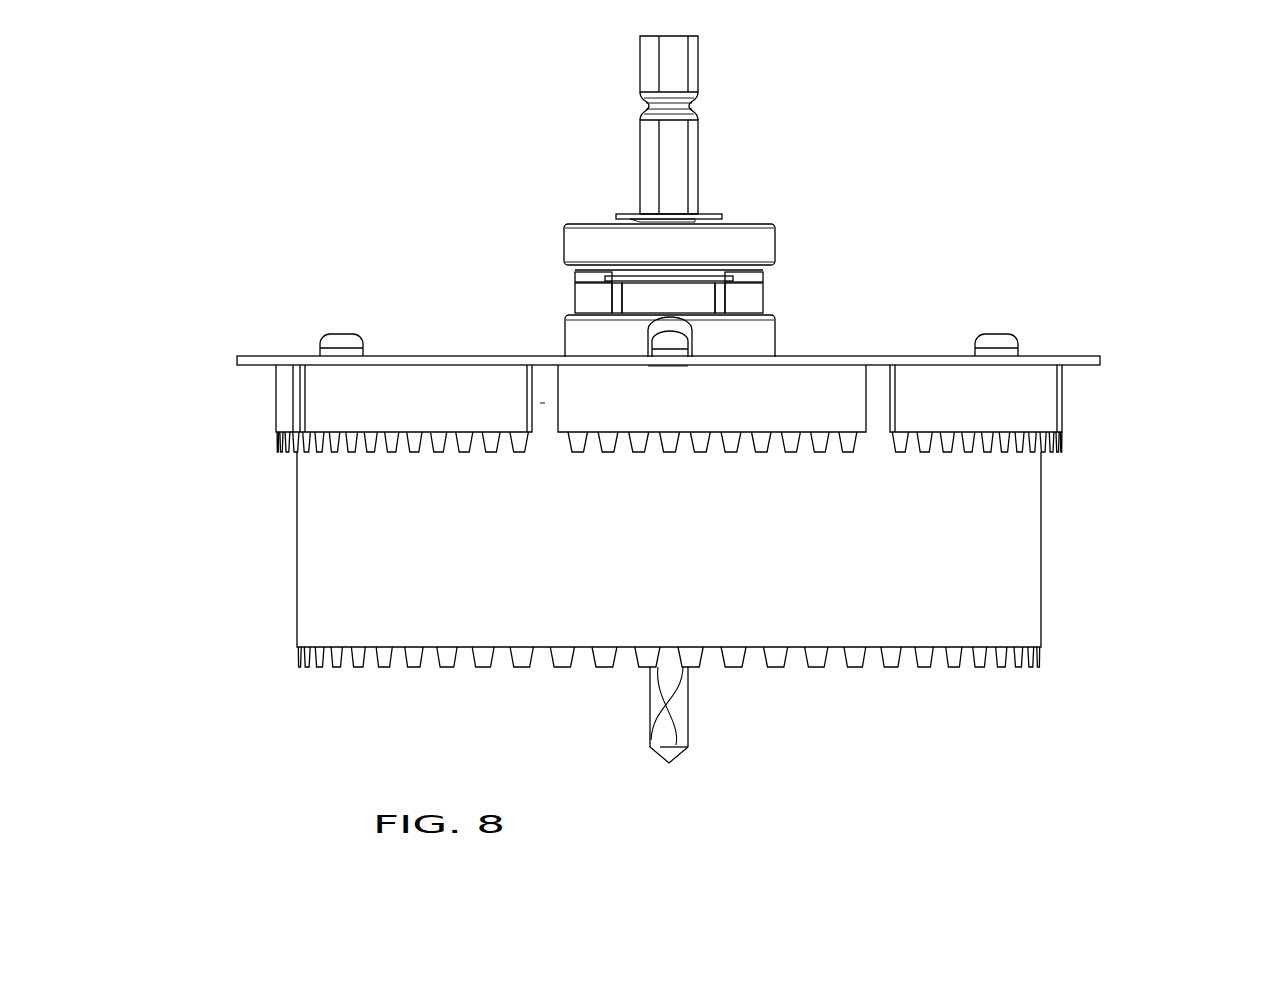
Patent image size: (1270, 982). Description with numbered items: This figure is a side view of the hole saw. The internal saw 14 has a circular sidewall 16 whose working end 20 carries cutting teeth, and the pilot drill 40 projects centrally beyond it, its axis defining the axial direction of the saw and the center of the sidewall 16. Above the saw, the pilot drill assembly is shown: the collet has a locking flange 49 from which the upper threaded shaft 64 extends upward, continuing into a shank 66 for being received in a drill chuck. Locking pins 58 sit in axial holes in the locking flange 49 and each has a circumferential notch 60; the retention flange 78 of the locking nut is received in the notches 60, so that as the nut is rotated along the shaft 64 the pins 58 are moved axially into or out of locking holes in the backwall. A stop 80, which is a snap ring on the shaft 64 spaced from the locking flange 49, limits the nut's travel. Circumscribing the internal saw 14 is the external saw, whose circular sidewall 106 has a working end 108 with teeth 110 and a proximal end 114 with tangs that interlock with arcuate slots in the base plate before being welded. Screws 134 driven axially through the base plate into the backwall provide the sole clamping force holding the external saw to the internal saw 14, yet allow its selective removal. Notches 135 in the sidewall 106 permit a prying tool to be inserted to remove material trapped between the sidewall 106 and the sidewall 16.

The shank 66 is at (700, 140).
The stop 80 is at (722, 215).
The retention flange 78 is at (680, 276).
The circumferential notch 60 is at (578, 274).
The locking pins 58 is at (594, 300).
The upper threaded shaft 64 is at (690, 297).
The locking flange 49 is at (740, 343).
The screws 134 is at (337, 333).
The notches 135 is at (871, 403).
The circular sidewall 106 is at (366, 398).
The proximal end 114 is at (1068, 378).
The working end 108 is at (1072, 424).
The teeth 110 is at (367, 452).
The internal saw 14 is at (743, 549).
The circular sidewall 16 is at (993, 590).
The working end 20 is at (1055, 662).
The pilot drill 40 is at (690, 707).